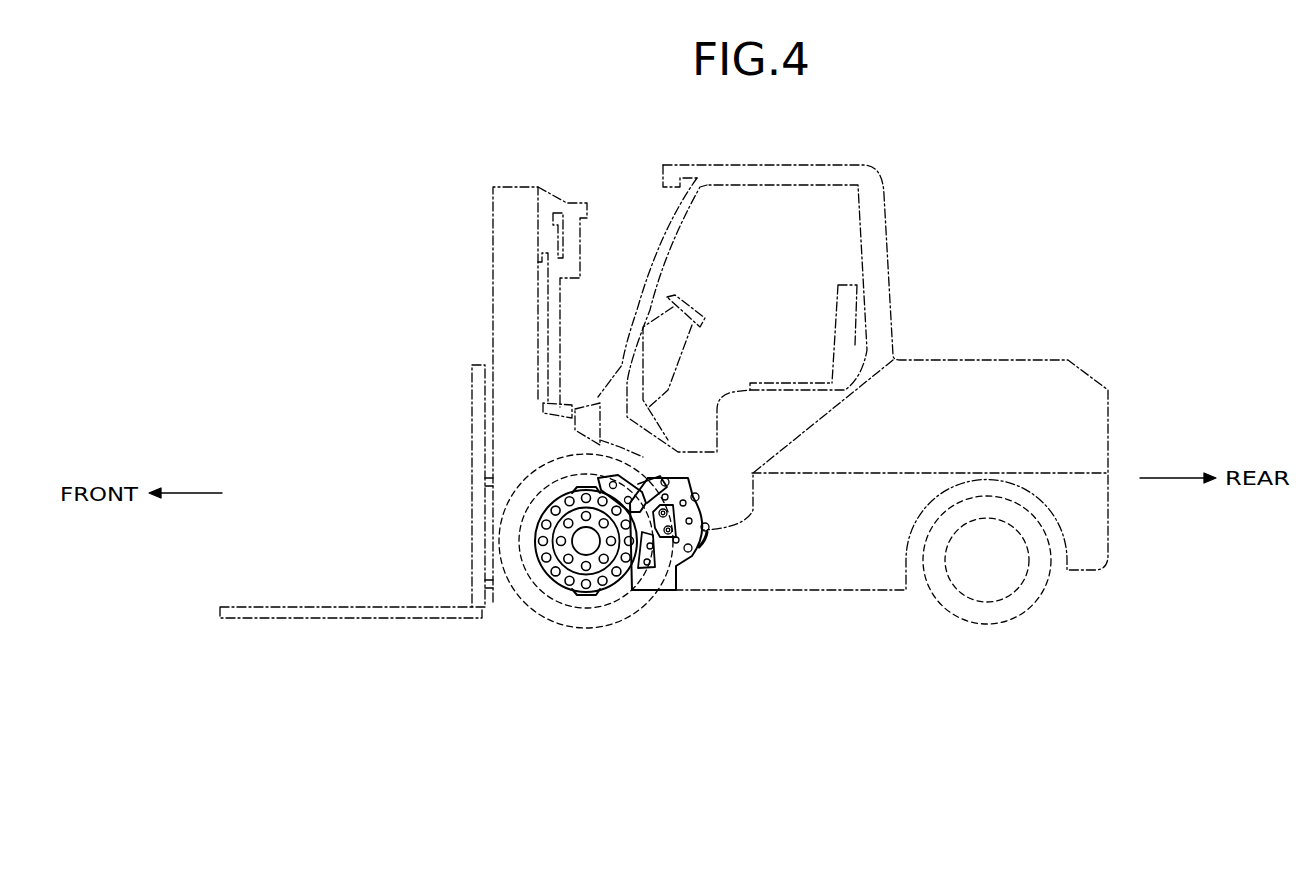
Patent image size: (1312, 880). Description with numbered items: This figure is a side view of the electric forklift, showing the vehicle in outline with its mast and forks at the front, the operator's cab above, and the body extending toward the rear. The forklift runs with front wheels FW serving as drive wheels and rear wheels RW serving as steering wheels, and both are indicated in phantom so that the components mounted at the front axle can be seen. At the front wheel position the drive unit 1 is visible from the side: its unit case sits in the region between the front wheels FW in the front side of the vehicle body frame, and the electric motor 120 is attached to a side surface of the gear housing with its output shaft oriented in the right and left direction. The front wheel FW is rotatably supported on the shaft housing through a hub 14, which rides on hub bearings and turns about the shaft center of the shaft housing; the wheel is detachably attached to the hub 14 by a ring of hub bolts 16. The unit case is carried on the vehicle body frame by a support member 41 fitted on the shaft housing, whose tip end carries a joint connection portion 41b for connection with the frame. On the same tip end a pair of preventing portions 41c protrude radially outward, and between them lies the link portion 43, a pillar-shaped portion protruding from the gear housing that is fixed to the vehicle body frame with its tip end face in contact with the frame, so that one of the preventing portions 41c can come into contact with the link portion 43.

The drive unit 1 is at (706, 547).
The hub 14 is at (540, 576).
The hub bolt 16 is at (565, 534).
The support member 41 is at (628, 578).
The joint connection portion 41b is at (600, 480).
The preventing portion 41c is at (700, 499).
The link portion 43 is at (665, 565).
The electric motor 120 is at (652, 478).
The front wheel FW is at (577, 628).
The rear wheel RW is at (989, 624).